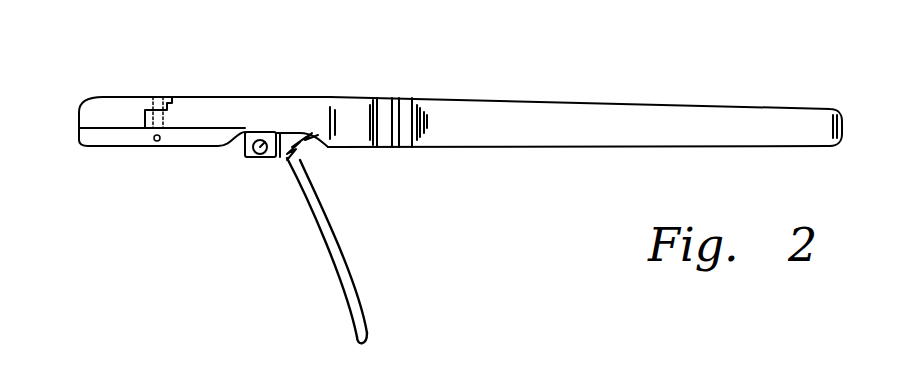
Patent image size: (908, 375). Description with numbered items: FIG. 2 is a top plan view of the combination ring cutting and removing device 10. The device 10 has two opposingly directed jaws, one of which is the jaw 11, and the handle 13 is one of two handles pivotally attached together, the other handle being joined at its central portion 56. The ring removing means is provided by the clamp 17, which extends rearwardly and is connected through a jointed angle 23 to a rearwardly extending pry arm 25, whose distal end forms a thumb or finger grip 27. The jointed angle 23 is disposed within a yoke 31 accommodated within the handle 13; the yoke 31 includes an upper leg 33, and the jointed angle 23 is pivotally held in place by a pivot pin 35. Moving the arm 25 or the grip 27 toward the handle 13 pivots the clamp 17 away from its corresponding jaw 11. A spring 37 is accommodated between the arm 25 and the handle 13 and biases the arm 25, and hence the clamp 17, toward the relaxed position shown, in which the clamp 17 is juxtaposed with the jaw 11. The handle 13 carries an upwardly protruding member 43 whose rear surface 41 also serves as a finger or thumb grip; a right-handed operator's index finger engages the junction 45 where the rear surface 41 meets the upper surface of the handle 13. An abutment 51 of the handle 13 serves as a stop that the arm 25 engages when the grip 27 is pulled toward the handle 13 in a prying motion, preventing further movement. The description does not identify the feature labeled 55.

The combination ring cutting and removing device 10 is at (622, 51).
The jaw 11 is at (117, 94).
The handle 13 is at (635, 125).
The clamp 17 is at (117, 148).
The jointed angle 23 is at (235, 138).
The pry arm 25 is at (325, 237).
The thumb or finger grip 27 is at (362, 332).
The yoke member 31 is at (259, 160).
The upper leg 33 is at (270, 163).
The pivot pin 35 is at (255, 162).
The spring 37 is at (295, 133).
The rear surface 41 is at (399, 147).
The upwardly protruding member 43 is at (400, 100).
The junction 45 is at (420, 122).
The abutment 51 is at (321, 146).
The latch notch 55 is at (176, 120).
The central portion 56 is at (165, 97).